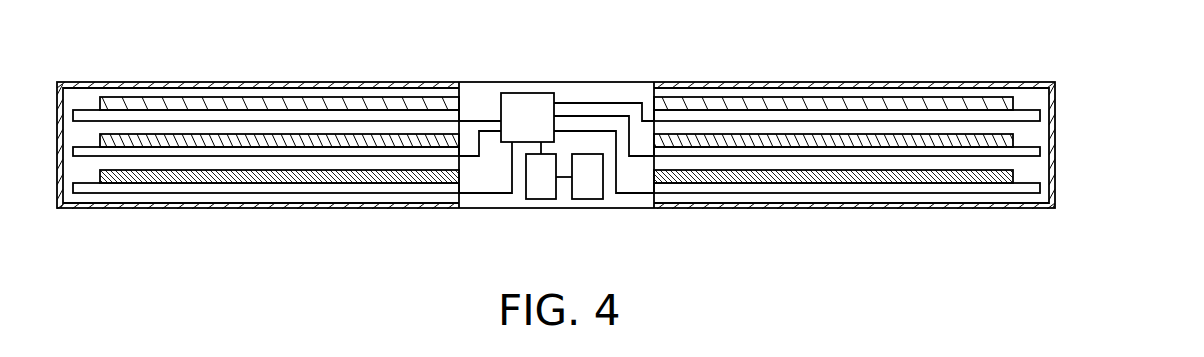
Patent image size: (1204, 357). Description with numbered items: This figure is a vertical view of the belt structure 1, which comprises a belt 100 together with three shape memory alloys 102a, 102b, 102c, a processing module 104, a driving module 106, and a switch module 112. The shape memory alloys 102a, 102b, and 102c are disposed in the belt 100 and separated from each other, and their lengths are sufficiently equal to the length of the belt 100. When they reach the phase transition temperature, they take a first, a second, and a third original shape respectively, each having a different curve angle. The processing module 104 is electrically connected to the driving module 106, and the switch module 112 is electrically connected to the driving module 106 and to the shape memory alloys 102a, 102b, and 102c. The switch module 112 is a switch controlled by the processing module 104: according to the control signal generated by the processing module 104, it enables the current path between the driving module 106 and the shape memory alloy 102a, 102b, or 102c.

The belt structure 1 is at (807, 23).
The belt 100 is at (937, 82).
The shape memory alloy 102a is at (1008, 105).
The shape memory alloy 102b is at (1007, 138).
The shape memory alloy 102c is at (1007, 175).
The processing module 104 is at (588, 185).
The driving module 106 is at (541, 186).
The switch module 112 is at (527, 113).